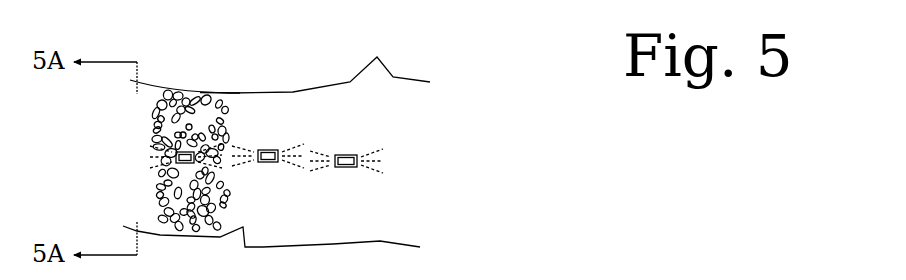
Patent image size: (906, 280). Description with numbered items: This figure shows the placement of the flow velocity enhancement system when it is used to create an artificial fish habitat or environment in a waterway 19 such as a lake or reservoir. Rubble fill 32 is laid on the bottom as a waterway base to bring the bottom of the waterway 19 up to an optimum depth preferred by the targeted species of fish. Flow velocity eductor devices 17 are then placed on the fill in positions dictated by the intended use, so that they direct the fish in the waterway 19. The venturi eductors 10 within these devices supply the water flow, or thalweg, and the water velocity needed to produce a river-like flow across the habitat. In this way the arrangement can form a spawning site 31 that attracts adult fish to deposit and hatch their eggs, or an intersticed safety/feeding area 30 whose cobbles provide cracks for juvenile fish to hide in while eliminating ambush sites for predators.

The venturi eductor 10 is at (175, 168).
The flow velocity eductor device 17 is at (197, 163).
The waterway 19 is at (292, 90).
The intersticed safety/feeding area 30 is at (185, 80).
The spawning site 31 is at (223, 80).
The rubble fill 32 is at (163, 117).